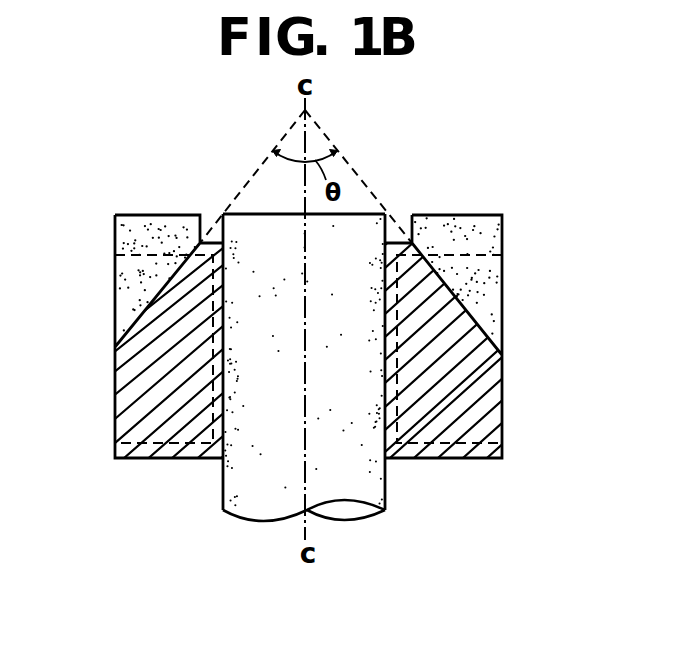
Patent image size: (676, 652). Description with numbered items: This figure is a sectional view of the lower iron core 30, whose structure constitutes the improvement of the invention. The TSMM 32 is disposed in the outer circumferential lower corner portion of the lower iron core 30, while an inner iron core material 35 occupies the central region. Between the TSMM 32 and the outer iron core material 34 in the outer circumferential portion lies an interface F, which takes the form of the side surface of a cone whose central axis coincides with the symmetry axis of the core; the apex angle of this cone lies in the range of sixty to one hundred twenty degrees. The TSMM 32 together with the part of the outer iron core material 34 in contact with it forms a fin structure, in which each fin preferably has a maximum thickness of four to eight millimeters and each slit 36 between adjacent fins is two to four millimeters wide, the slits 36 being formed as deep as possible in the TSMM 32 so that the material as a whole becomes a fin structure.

The lower iron core 30 is at (503, 370).
The TSMM 32 is at (454, 448).
The outer iron core material 34 is at (475, 223).
The inner iron core material 35 is at (225, 485).
The slit 36 is at (140, 443).
The interface F is at (487, 333).